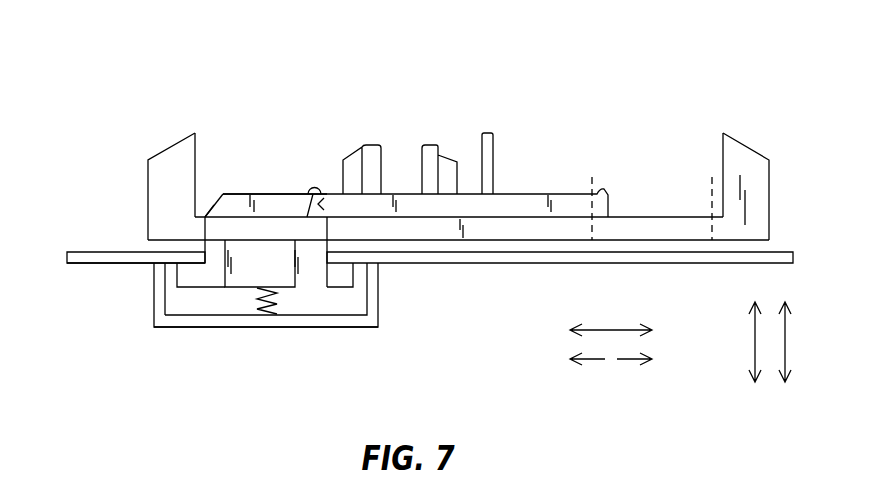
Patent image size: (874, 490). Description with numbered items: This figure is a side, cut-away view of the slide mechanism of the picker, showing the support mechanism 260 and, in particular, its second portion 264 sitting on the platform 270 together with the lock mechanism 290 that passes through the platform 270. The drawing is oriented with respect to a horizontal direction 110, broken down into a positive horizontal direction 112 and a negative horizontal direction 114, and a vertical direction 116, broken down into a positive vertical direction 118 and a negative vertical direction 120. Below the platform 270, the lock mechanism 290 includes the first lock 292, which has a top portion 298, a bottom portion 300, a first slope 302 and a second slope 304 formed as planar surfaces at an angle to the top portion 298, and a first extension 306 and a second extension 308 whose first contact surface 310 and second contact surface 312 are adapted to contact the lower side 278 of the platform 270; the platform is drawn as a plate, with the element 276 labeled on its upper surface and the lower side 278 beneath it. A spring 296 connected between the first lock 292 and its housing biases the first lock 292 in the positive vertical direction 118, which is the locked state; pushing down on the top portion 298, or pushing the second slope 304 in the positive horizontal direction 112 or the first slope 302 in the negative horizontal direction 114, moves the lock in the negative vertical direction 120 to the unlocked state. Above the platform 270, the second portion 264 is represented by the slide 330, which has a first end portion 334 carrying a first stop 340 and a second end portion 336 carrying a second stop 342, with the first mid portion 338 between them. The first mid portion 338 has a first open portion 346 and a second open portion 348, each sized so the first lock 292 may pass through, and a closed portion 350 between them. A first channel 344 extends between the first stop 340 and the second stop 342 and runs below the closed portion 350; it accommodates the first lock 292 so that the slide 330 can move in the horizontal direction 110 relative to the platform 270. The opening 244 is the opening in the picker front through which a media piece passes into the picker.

The horizontal direction 110 is at (610, 329).
The positive horizontal direction 112 is at (595, 361).
The negative horizontal direction 114 is at (625, 361).
The vertical direction 116 is at (787, 341).
The positive vertical direction 118 is at (752, 330).
The negative vertical direction 120 is at (752, 358).
The opening 244 is at (315, 323).
The support mechanism 260 is at (674, 53).
The second portion 264 is at (674, 53).
The platform 270 is at (66, 258).
The plate 276 is at (108, 251).
The lower side 278 is at (75, 264).
The lock mechanism 290 is at (398, 329).
The first lock 292 is at (265, 107).
The spring 296 is at (287, 297).
The top portion 298 is at (233, 195).
The bottom portion 300 is at (222, 290).
The first slope 302 is at (217, 205).
The second slope 304 is at (335, 188).
The first extension 306 is at (175, 275).
The second extension 308 is at (353, 275).
The first contact surface 310 is at (183, 268).
The second contact surface 312 is at (347, 317).
The slide 330 is at (769, 199).
The first end portion 334 is at (170, 141).
The second end portion 336 is at (749, 141).
The first mid portion 338 is at (522, 191).
The first stop 340 is at (198, 146).
The second stop 342 is at (722, 152).
The first channel 344 is at (514, 231).
The first open portion 346 is at (327, 170).
The second open portion 348 is at (592, 180).
The closed portion 350 is at (328, 123).